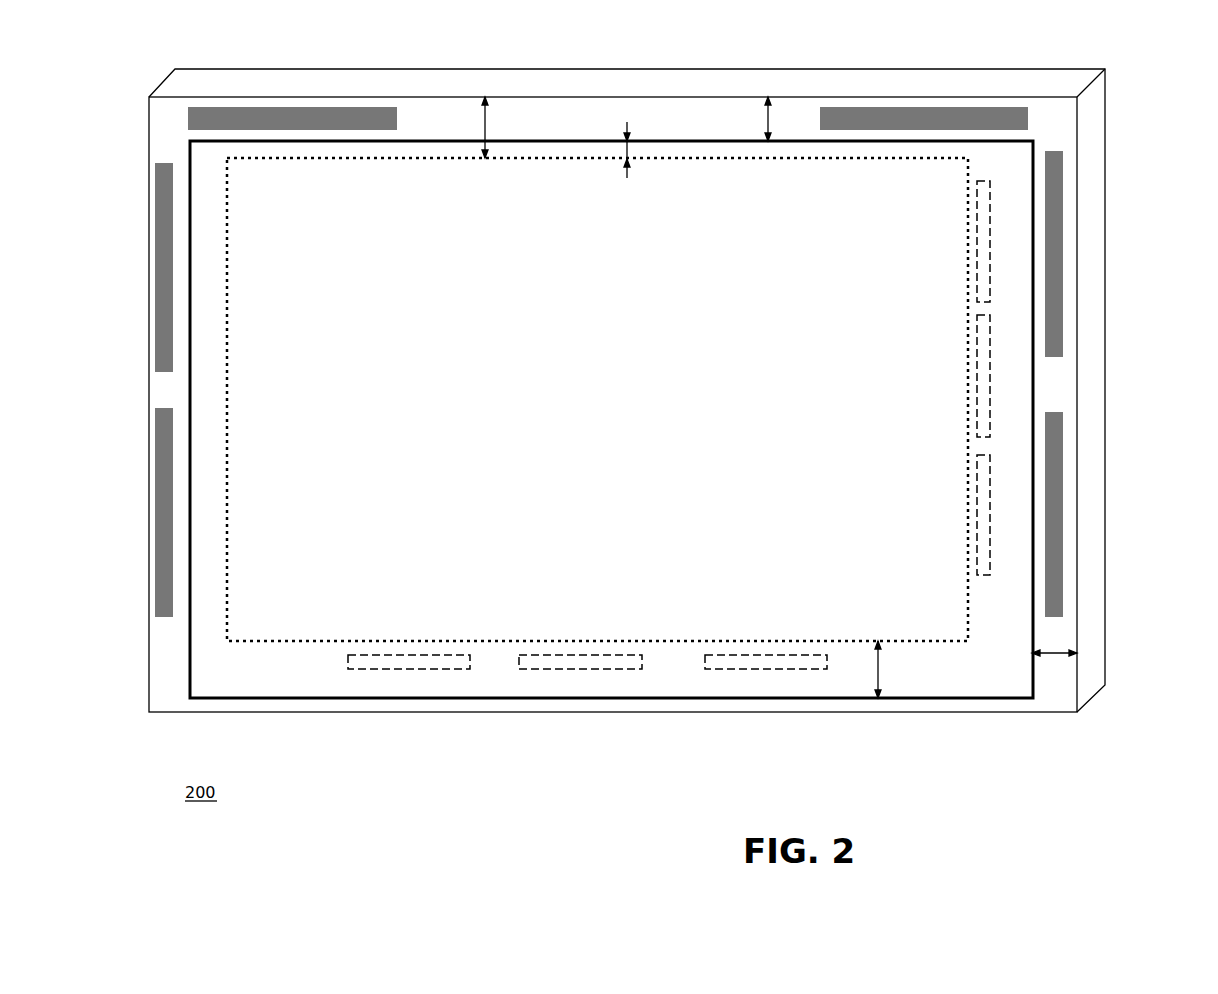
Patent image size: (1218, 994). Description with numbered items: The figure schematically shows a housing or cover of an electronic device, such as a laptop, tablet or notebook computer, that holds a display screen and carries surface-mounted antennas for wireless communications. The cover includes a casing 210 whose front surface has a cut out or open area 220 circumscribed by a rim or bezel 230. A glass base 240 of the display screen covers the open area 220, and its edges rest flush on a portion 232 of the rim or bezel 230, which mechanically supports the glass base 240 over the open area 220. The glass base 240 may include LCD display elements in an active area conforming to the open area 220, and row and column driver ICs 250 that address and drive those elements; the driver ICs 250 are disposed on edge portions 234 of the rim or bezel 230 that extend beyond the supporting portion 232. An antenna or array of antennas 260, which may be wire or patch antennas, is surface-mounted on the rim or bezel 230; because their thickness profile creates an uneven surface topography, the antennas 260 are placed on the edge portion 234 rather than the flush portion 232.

The casing 210 is at (150, 92).
The open area 220 is at (413, 158).
The rim or bezel 230 is at (487, 127).
The portion of rim or bezel 232 is at (632, 152).
The edge portion of rim or bezel 234 is at (770, 122).
The glass base 240 is at (570, 141).
The driver ICs 250 is at (990, 420).
The antennas 260 is at (905, 100).